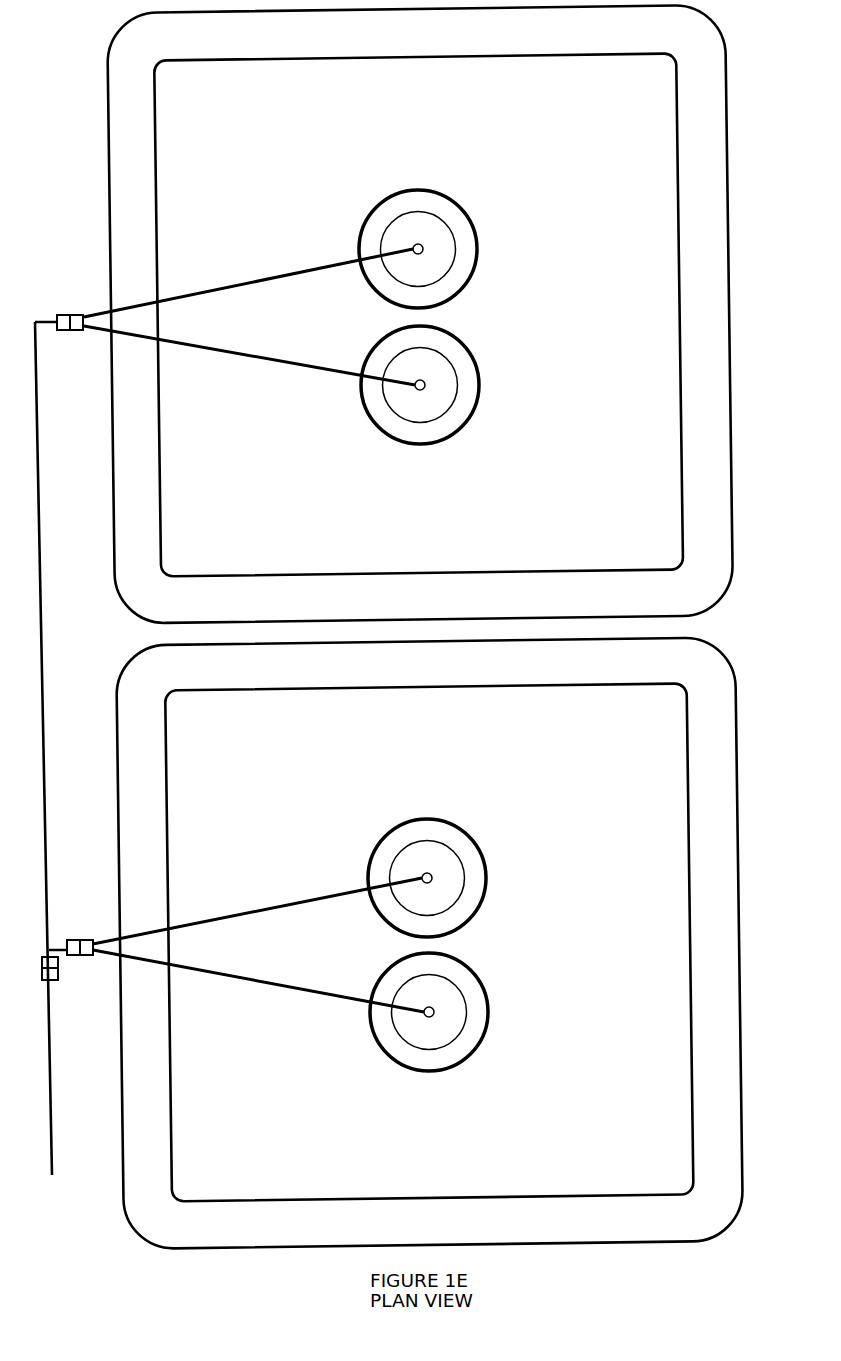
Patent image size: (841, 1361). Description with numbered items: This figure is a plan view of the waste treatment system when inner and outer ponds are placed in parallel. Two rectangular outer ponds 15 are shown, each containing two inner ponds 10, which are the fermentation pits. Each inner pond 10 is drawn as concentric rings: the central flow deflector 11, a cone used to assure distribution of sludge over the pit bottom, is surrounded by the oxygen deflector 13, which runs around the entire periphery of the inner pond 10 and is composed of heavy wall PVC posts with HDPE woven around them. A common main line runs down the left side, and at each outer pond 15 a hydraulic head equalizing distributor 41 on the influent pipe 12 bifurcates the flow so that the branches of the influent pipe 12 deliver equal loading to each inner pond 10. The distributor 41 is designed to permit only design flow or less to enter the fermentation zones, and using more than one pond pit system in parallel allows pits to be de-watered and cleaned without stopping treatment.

The inner pond 10 is at (467, 217).
The flow deflector 11 is at (424, 252).
The influent pipe 12 is at (302, 275).
The oxygen deflector 13 is at (465, 285).
The outer pond 15 is at (578, 303).
The hydraulic head equalizing distributor 41 is at (62, 313).